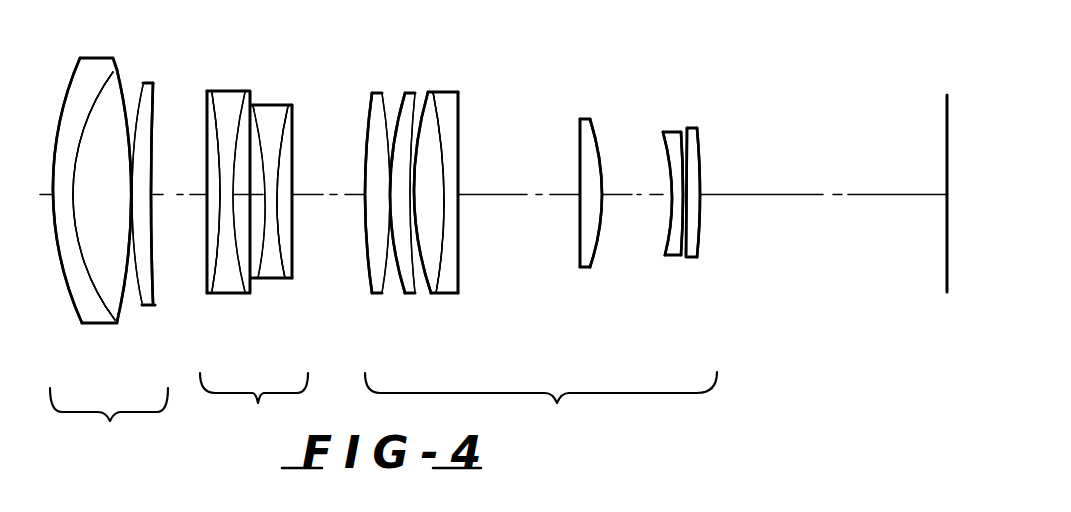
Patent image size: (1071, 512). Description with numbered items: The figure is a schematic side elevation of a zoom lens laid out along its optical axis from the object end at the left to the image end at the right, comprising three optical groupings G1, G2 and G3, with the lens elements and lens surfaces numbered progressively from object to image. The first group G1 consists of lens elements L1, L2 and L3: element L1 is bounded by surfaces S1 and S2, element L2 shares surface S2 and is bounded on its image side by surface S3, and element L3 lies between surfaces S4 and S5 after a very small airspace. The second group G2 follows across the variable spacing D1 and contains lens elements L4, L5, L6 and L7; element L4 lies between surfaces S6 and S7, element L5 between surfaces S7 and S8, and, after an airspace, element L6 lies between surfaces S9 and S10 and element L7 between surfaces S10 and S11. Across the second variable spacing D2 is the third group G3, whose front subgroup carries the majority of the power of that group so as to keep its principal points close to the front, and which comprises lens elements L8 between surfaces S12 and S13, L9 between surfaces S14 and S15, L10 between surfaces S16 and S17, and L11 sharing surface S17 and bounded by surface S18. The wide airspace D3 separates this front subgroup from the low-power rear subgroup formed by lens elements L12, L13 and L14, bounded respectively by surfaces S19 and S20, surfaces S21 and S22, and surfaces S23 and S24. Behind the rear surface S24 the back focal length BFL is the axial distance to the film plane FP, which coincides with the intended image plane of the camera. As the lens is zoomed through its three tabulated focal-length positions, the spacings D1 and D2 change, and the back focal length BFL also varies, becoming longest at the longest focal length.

The lens element L1 is at (92, 67).
The lens element L2 is at (113, 97).
The lens element L3 is at (150, 100).
The lens element L4 is at (207, 114).
The lens element L5 is at (225, 102).
The lens element L6 is at (270, 110).
The lens element L7 is at (293, 113).
The lens element L8 is at (375, 90).
The lens element L9 is at (410, 92).
The lens element L10 is at (428, 96).
The lens element L11 is at (455, 107).
The lens element L12 is at (587, 118).
The lens element L13 is at (677, 135).
The lens element L14 is at (695, 152).
The lens surface S1 is at (70, 291).
The lens surface S2 is at (95, 302).
The lens surface S3 is at (128, 298).
The lens surface S4 is at (139, 304).
The lens surface S5 is at (153, 287).
The lens surface S6 is at (207, 246).
The lens surface S7 is at (210, 252).
The lens surface S8 is at (237, 294).
The lens surface S9 is at (259, 280).
The lens surface S10 is at (282, 282).
The lens surface S11 is at (293, 223).
The lens surface S12 is at (367, 250).
The lens surface S13 is at (382, 268).
The lens surface S14 is at (400, 288).
The lens surface S15 is at (410, 296).
The lens surface S16 is at (424, 284).
The lens surface S17 is at (438, 268).
The lens surface S18 is at (458, 240).
The lens surface S19 is at (580, 251).
The lens surface S20 is at (598, 232).
The lens surface S21 is at (665, 251).
The lens surface S22 is at (678, 256).
The lens surface S23 is at (696, 249).
The lens surface S24 is at (700, 226).
The first lens group G1 is at (116, 231).
The second lens group G2 is at (257, 228).
The third lens group G3 is at (551, 224).
The group spacing D1 is at (176, 180).
The group spacing D2 is at (327, 180).
The subgroup airspace D3 is at (523, 181).
The back focal length BFL is at (745, 180).
The film plane FP is at (944, 121).